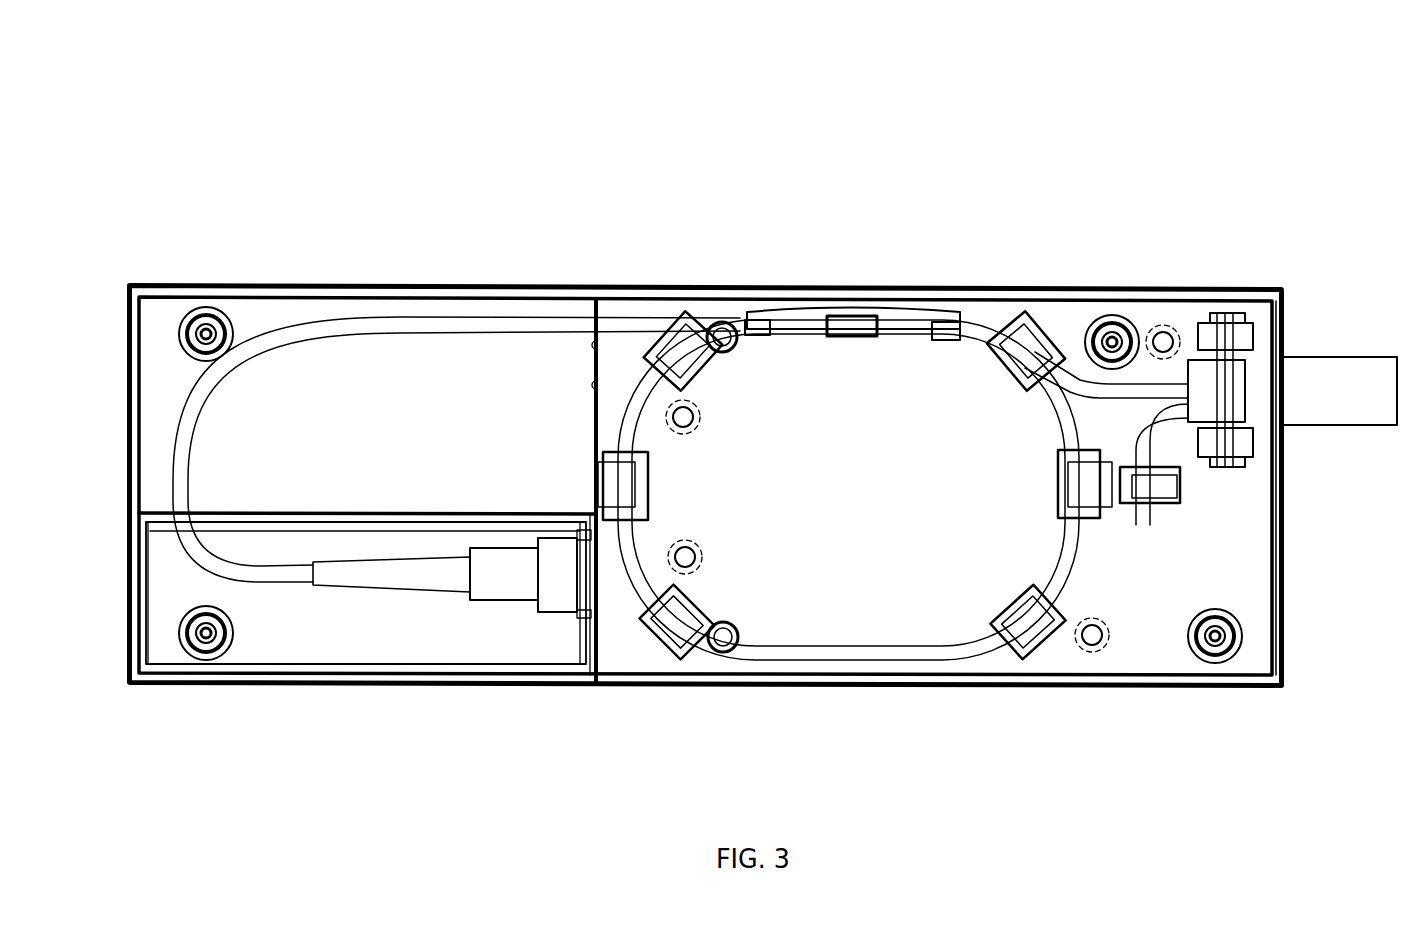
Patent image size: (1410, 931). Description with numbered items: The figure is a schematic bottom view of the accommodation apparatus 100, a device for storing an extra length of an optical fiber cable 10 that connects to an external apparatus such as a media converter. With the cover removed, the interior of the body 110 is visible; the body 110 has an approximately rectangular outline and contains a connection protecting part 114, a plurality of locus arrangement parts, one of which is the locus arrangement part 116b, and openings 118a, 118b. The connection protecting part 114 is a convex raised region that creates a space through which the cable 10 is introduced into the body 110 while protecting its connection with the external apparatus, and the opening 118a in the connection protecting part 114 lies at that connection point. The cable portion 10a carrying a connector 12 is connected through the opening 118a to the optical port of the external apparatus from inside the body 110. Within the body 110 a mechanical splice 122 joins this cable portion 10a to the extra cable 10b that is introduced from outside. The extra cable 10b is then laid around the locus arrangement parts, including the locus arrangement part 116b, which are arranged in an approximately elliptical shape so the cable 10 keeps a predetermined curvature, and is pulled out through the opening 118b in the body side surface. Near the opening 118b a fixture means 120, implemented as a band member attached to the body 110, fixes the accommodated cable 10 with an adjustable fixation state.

The accommodation apparatus 100 is at (790, 86).
The body 110 is at (392, 286).
The connection protecting part 114 is at (378, 630).
The locus arrangement part 116b is at (1002, 630).
The opening 118a is at (598, 625).
The opening 118b is at (1288, 430).
The fixture means 120 is at (1242, 311).
The mechanical splice 122 is at (898, 306).
The optical fiber cable 10 is at (1349, 358).
The optical fiber cable 10a is at (1083, 382).
The extra cable 10b is at (1067, 560).
The connector 12 is at (507, 590).